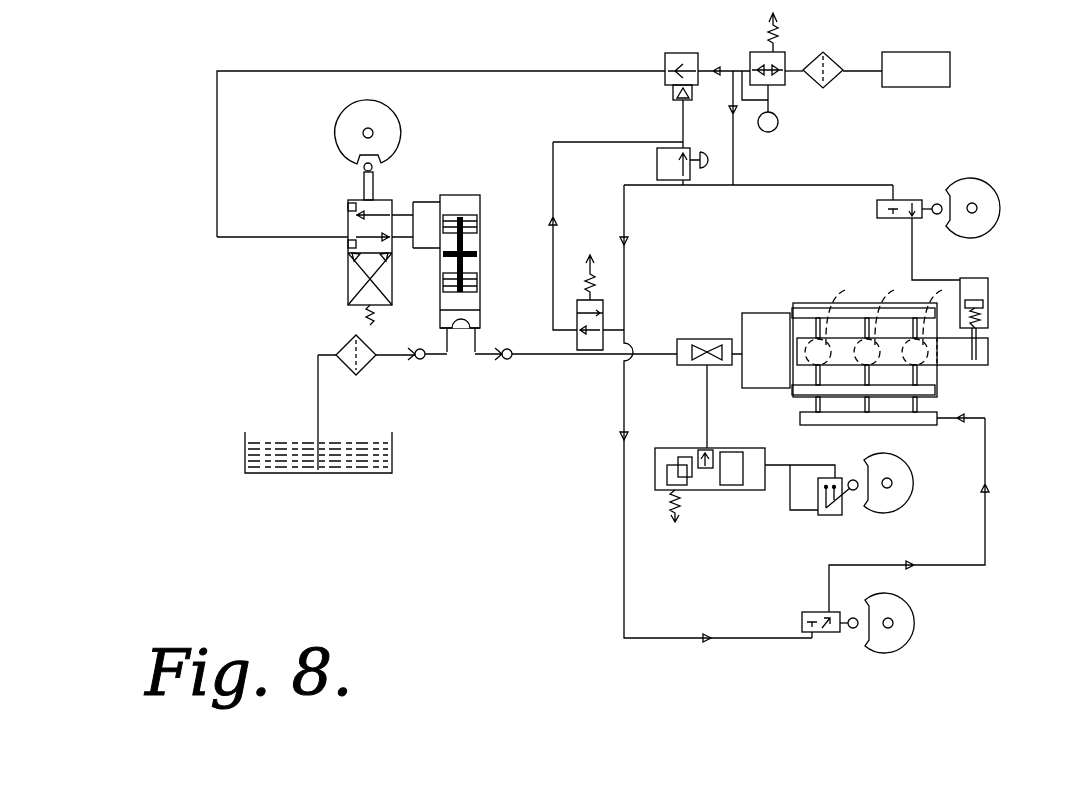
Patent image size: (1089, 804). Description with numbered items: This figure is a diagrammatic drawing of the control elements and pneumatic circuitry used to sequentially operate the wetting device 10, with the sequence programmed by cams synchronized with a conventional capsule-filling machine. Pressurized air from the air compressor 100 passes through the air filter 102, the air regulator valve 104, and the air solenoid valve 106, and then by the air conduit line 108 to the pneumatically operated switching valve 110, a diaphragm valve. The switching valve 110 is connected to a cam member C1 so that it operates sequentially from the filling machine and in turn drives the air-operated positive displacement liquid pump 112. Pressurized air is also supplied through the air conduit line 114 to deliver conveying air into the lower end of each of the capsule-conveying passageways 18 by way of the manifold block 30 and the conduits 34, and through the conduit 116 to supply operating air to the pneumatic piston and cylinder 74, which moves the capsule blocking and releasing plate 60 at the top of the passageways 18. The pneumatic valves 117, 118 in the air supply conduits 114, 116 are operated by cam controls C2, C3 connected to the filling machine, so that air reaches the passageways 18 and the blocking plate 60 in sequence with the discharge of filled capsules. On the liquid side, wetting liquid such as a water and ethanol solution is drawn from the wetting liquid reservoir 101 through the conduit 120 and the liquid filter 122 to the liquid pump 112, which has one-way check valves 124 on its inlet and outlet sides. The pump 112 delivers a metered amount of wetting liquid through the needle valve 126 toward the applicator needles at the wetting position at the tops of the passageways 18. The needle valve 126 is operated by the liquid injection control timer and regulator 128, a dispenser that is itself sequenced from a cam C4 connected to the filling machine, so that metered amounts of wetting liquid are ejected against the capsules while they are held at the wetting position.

The wetting device 10 is at (895, 335).
The capsule-conveying passageways 18 is at (900, 292).
The manifold block 30 is at (905, 425).
The conduits 34 is at (973, 392).
The capsule blocking and releasing plate 60 is at (988, 345).
The pneumatic piston and cylinder 74 is at (988, 285).
The air compressor 100 is at (925, 52).
The wetting liquid reservoir 101 is at (392, 455).
The air filter 102 is at (835, 58).
The air regulator valve 104 is at (787, 52).
The air solenoid valve 106 is at (682, 50).
The air conduit line 108 is at (500, 71).
The switching valve 110 is at (385, 200).
The air-operated positive displacement liquid pump 112 is at (481, 280).
The air conduit line 114 is at (735, 165).
The conduit 116 is at (830, 178).
The pneumatic valve 117 is at (905, 200).
The pneumatic valve 118 is at (810, 612).
The conduit 120 is at (318, 415).
The liquid filter 122 is at (343, 345).
The one-way check valves 124 is at (422, 360).
The needle valve 126 is at (690, 339).
The liquid injection control timer and regulator 128 is at (705, 490).
The cam member C1 is at (401, 132).
The cam control C2 is at (1000, 190).
The cam control C3 is at (918, 620).
The cam C4 is at (914, 495).